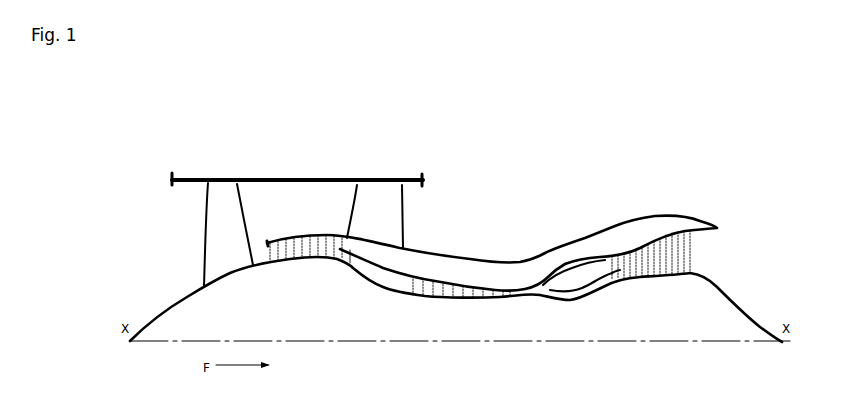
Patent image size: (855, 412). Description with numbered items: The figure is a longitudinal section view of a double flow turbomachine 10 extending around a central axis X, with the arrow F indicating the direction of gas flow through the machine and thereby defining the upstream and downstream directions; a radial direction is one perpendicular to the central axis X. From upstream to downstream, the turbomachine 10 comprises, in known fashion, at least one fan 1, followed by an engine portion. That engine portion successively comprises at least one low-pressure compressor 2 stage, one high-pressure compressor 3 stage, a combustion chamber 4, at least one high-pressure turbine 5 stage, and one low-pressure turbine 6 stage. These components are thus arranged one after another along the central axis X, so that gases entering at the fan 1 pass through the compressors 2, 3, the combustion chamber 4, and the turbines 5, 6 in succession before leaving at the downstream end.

The double flow turbomachine 10 is at (187, 137).
The fan 1 is at (233, 181).
The low-pressure compressor stage 2 is at (293, 233).
The high-pressure compressor stage 3 is at (457, 277).
The combustion chamber 4 is at (570, 275).
The high-pressure turbine stage 5 is at (622, 243).
The low-pressure turbine stage 6 is at (665, 210).